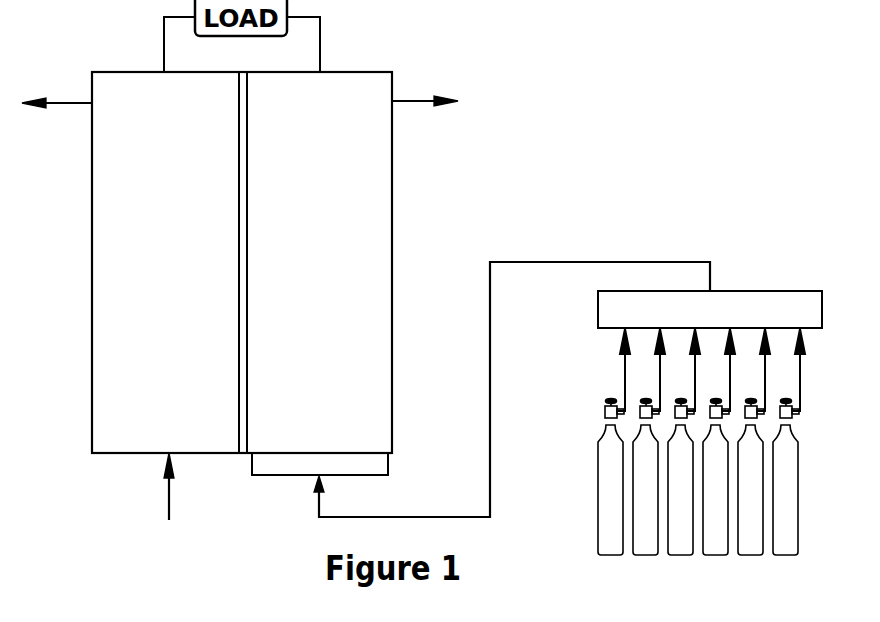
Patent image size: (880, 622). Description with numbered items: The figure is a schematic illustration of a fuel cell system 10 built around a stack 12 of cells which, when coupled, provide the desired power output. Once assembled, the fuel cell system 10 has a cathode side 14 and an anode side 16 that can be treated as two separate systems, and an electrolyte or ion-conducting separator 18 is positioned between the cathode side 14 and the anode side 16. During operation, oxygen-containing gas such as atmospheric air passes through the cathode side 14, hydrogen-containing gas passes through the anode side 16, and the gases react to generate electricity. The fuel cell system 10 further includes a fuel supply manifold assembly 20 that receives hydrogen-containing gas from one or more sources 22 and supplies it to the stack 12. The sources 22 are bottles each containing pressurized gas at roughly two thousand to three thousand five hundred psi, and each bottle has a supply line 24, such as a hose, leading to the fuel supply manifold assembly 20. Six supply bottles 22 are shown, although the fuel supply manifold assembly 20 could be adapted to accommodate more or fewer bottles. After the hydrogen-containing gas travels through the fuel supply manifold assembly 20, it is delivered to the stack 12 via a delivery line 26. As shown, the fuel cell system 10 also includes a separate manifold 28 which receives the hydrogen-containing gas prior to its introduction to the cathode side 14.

The fuel cell system 10 is at (484, 126).
The stack 12 is at (370, 196).
The cathode side 14 is at (151, 270).
The anode side 16 is at (304, 270).
The electrolyte separator 18 is at (239, 328).
The fuel supply manifold assembly 20 is at (797, 312).
The sources 22 is at (611, 545).
The supply line 24 is at (730, 374).
The delivery line 26 is at (495, 440).
The separate manifold 28 is at (366, 462).